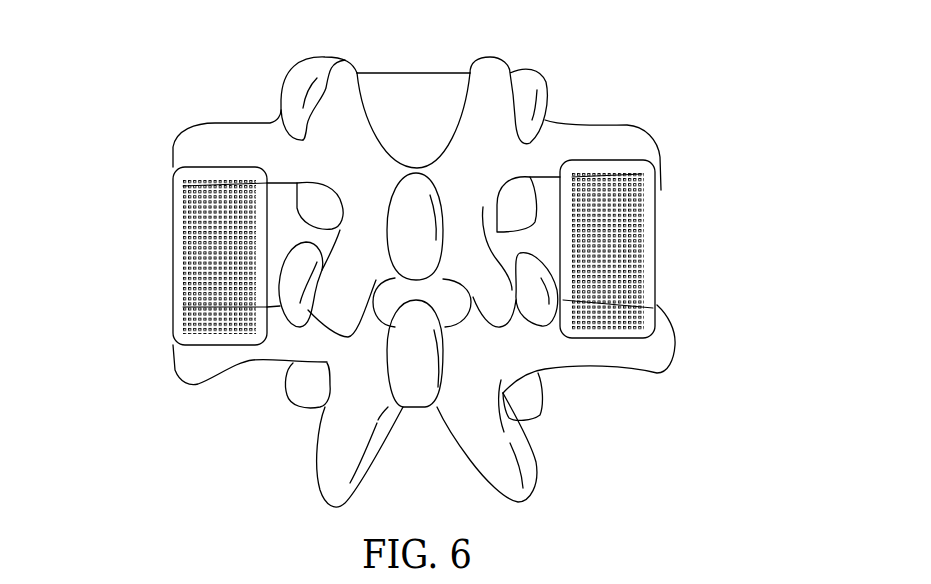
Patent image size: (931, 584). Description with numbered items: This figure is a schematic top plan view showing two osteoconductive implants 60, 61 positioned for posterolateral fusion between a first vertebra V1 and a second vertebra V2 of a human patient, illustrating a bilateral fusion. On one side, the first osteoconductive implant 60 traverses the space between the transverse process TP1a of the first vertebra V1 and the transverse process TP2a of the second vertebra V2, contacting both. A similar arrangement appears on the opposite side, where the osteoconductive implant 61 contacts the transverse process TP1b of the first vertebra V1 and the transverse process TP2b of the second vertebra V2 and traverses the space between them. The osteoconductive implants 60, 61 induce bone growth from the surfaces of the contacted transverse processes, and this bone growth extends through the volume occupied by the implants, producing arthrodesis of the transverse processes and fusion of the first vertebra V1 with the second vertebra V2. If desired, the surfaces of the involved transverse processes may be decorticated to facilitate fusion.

The first osteoconductive implant 60 is at (103, 257).
The osteoconductive implant 61 is at (730, 258).
The first vertebra V1 is at (418, 169).
The second vertebra V2 is at (419, 413).
The transverse process TP1a is at (185, 152).
The transverse process TP1b is at (652, 126).
The transverse process TP2a is at (187, 363).
The transverse process TP2b is at (632, 380).